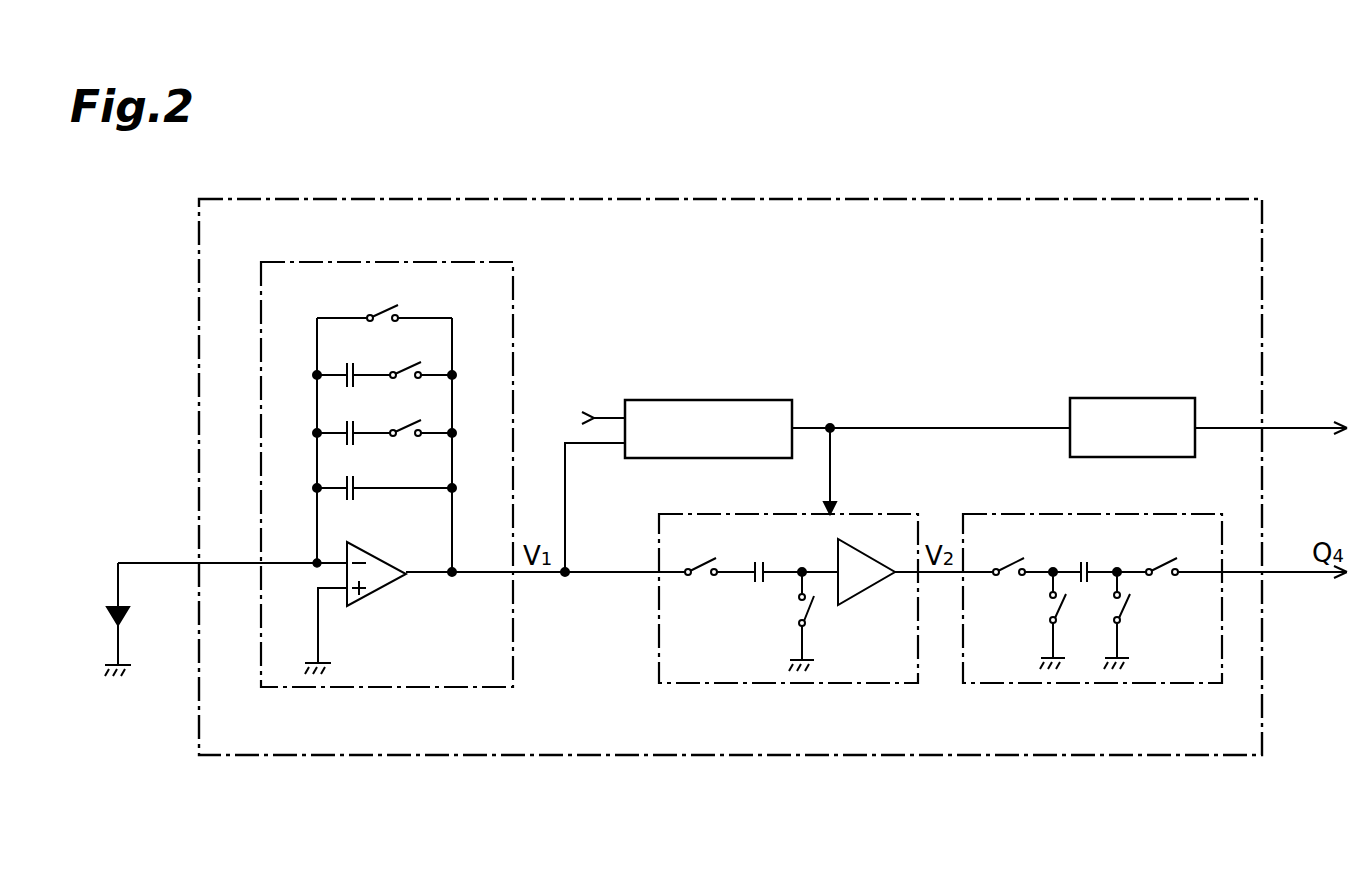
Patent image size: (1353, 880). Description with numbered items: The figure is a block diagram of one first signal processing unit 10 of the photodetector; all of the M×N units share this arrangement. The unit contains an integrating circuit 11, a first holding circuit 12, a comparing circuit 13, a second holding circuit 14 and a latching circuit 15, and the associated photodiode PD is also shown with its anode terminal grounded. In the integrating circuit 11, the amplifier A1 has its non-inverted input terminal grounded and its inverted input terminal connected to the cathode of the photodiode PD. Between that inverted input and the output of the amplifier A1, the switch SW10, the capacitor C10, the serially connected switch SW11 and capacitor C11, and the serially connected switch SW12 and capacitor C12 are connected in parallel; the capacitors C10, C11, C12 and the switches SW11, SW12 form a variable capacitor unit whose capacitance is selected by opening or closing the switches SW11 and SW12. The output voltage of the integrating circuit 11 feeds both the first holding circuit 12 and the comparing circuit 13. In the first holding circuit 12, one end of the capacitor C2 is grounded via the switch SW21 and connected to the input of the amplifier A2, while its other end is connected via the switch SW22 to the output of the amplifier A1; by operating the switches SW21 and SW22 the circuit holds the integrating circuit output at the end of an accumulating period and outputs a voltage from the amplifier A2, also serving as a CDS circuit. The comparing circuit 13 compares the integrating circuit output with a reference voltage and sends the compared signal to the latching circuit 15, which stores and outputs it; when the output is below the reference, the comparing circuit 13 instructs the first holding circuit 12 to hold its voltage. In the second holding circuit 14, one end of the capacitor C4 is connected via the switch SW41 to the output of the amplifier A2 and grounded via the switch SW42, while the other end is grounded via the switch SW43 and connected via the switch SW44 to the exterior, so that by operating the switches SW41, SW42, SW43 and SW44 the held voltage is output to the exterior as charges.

The first signal processing unit 10 is at (1130, 199).
The integrating circuit 11 is at (455, 687).
The first holding circuit 12 is at (860, 683).
The comparing circuit 13 is at (707, 400).
The second holding circuit 14 is at (1172, 683).
The latching circuit 15 is at (1130, 398).
The photodiode PD is at (108, 620).
The amplifier A1 is at (355, 608).
The amplifier A2 is at (880, 580).
The capacitor C10 is at (350, 500).
The capacitor C11 is at (355, 445).
The capacitor C12 is at (355, 388).
The capacitor C2 is at (755, 562).
The capacitor C4 is at (1081, 562).
The switch SW10 is at (384, 323).
The switch SW11 is at (406, 438).
The switch SW12 is at (406, 380).
The switch SW21 is at (798, 609).
The switch SW22 is at (702, 578).
The switch SW41 is at (1008, 577).
The switch SW42 is at (1058, 606).
The switch SW43 is at (1125, 608).
The switch SW44 is at (1162, 577).